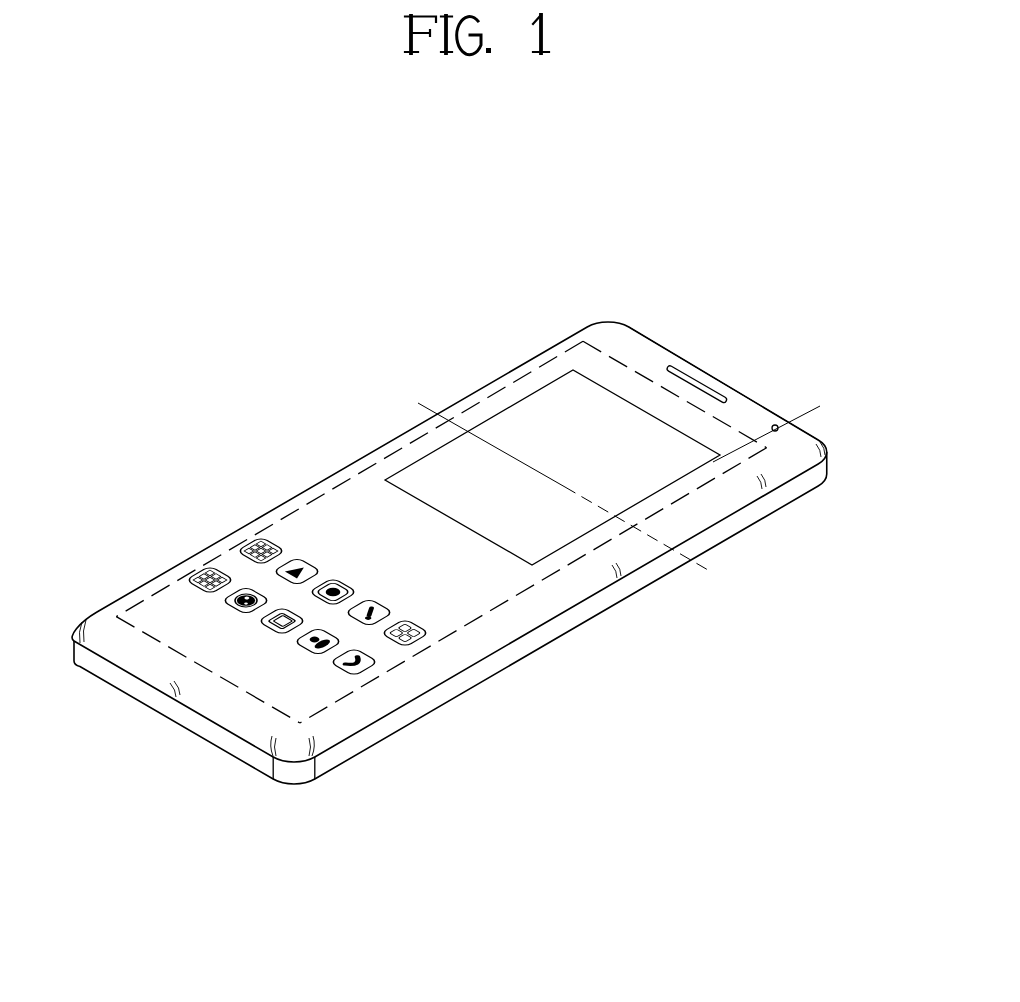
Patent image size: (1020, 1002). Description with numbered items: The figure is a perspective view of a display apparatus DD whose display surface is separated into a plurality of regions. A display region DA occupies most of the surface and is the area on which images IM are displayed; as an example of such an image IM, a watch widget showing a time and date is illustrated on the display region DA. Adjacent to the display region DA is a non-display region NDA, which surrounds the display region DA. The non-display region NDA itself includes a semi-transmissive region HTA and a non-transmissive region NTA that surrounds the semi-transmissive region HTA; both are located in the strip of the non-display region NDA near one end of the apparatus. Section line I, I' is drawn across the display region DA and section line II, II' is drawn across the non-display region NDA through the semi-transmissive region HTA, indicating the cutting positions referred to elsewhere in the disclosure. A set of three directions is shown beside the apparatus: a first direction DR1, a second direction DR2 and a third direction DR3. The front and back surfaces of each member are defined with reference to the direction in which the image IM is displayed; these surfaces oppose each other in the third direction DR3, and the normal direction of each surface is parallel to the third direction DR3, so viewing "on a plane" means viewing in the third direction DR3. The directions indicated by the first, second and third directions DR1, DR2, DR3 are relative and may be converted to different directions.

The display apparatus DD is at (787, 240).
The display region DA is at (331, 511).
The non-display region NDA is at (733, 295).
The non-transmissive region NTA is at (710, 378).
The semi-transmissive region HTA is at (776, 426).
The image IM is at (497, 411).
The section line I is at (541, 486).
The section line I' is at (682, 587).
The section line II is at (766, 457).
The section line II' is at (846, 419).
The first direction DR1 is at (709, 808).
The second direction DR2 is at (709, 808).
The third direction DR3 is at (709, 808).